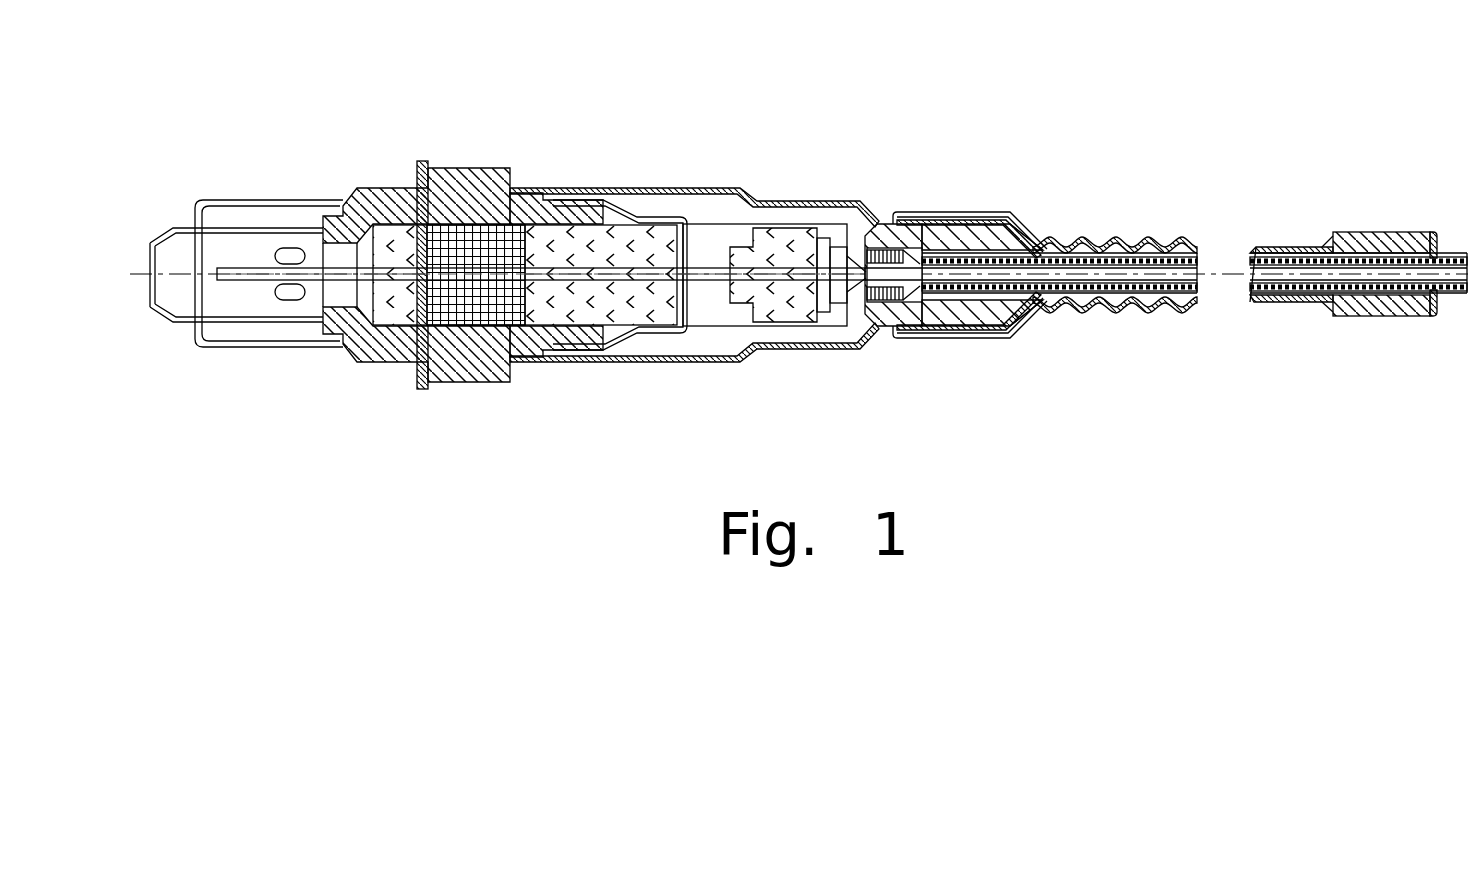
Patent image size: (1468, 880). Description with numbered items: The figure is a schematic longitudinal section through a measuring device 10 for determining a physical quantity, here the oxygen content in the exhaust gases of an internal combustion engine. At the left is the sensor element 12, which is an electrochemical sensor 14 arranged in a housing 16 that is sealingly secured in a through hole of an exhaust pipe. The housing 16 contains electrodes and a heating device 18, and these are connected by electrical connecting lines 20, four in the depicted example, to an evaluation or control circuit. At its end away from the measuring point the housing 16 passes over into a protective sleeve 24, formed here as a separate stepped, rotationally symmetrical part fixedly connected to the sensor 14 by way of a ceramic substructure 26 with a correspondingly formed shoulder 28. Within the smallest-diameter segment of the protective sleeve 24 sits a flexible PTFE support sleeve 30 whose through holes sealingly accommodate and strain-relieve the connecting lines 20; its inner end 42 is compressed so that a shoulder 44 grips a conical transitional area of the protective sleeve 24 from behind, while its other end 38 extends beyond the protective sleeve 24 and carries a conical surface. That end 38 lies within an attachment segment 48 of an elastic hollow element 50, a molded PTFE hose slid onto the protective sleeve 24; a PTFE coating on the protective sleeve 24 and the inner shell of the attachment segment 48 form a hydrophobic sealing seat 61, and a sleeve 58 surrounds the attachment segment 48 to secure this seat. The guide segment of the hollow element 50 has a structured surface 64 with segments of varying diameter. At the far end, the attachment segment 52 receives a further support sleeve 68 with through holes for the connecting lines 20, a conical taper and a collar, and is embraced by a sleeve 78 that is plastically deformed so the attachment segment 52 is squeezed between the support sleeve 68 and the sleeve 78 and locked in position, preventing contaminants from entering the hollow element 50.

The measuring device 10 is at (625, 148).
The sensor element 12 is at (240, 272).
The electrochemical sensor 14 is at (377, 177).
The housing 16 is at (240, 345).
The heating device 18 is at (709, 270).
The electrical connecting lines 20 is at (1110, 257).
The protective sleeve 24 is at (815, 200).
The ceramic substructure 26 is at (460, 183).
The shoulder 28 is at (537, 188).
The support sleeve 30 is at (947, 240).
The end of support sleeve 38 is at (1013, 302).
The end of support sleeve within protective sleeve 42 is at (893, 312).
The shoulder 44 is at (879, 240).
The attachment segment 48 is at (1010, 203).
The elastic hollow element 50 is at (1183, 244).
The attachment segment 52 is at (1321, 244).
The sleeve 58 is at (970, 334).
The sealing seat 61 is at (938, 332).
The structured surface 64 is at (1090, 305).
The support sleeve 68 is at (1375, 234).
The sleeve 78 is at (1426, 232).